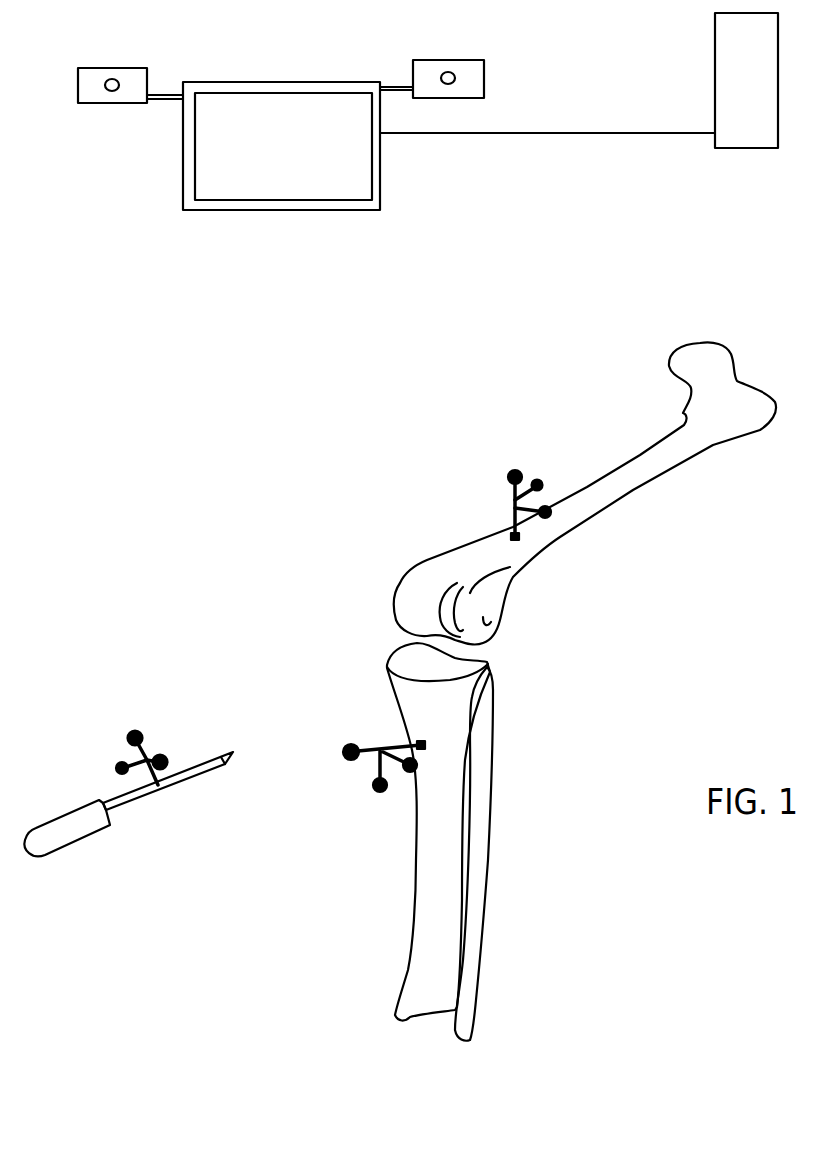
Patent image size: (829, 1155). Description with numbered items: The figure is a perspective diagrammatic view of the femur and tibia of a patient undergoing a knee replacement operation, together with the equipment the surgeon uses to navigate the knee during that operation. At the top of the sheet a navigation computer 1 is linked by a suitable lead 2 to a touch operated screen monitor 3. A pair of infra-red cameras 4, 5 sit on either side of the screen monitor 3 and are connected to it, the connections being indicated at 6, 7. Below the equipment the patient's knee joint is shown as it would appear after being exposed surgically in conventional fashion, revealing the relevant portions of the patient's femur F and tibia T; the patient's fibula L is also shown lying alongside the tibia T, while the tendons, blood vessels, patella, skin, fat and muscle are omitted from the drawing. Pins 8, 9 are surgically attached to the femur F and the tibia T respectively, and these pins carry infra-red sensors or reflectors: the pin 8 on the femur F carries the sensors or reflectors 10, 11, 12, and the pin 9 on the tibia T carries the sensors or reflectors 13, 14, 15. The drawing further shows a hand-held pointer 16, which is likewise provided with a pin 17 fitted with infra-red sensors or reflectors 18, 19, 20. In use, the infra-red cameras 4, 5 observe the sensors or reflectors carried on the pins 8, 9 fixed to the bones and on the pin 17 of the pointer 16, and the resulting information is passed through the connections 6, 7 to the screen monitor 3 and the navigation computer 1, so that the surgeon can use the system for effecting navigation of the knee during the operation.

The navigation computer 1 is at (715, 48).
The lead 2 is at (553, 135).
The touch operated screen monitor 3 is at (265, 188).
The infra-red camera 4 is at (160, 57).
The infra-red camera 5 is at (409, 51).
The connection 6 is at (163, 105).
The connection 7 is at (398, 95).
The pin 8 is at (517, 478).
The pin 9 is at (360, 763).
The infra-red sensor or reflector 10 is at (515, 470).
The infra-red sensor or reflector 11 is at (541, 481).
The infra-red sensor or reflector 12 is at (549, 506).
The infra-red sensor or reflector 13 is at (340, 754).
The infra-red sensor or reflector 14 is at (372, 791).
The infra-red sensor or reflector 15 is at (407, 781).
The hand-held pointer 16 is at (193, 787).
The pin 17 is at (141, 735).
The infra-red sensor or reflector 18 is at (137, 725).
The infra-red sensor or reflector 19 is at (158, 752).
The infra-red sensor or reflector 20 is at (114, 765).
The femur F is at (630, 510).
The tibia T is at (415, 848).
The fibula L is at (493, 856).